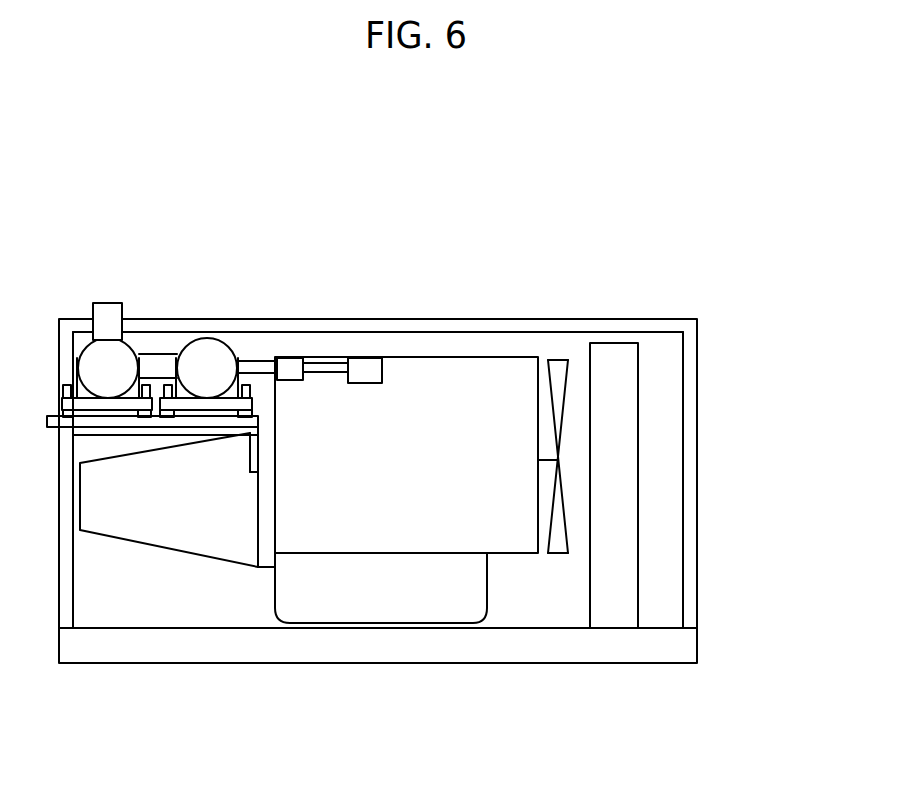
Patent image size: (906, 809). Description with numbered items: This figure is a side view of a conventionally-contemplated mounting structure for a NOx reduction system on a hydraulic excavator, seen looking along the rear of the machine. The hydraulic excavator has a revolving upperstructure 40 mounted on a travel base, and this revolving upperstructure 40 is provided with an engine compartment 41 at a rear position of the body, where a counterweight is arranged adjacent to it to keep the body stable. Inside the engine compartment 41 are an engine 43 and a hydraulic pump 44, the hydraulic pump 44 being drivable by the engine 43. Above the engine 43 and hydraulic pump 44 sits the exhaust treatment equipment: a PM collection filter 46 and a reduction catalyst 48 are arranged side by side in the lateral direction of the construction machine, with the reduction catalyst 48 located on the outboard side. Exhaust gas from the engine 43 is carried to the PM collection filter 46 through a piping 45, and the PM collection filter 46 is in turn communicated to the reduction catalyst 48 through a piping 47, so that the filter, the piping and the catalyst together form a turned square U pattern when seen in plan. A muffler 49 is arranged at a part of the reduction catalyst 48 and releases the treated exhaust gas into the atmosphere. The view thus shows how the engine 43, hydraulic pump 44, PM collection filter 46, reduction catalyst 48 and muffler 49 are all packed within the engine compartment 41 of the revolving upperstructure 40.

The revolving upperstructure 40 is at (698, 420).
The engine compartment 41 is at (537, 603).
The engine 43 is at (406, 505).
The hydraulic pump 44 is at (185, 532).
The piping 45 is at (253, 362).
The PM collection filter 46 is at (208, 357).
The piping 47 is at (158, 362).
The reduction catalyst 48 is at (115, 372).
The muffler 49 is at (108, 303).